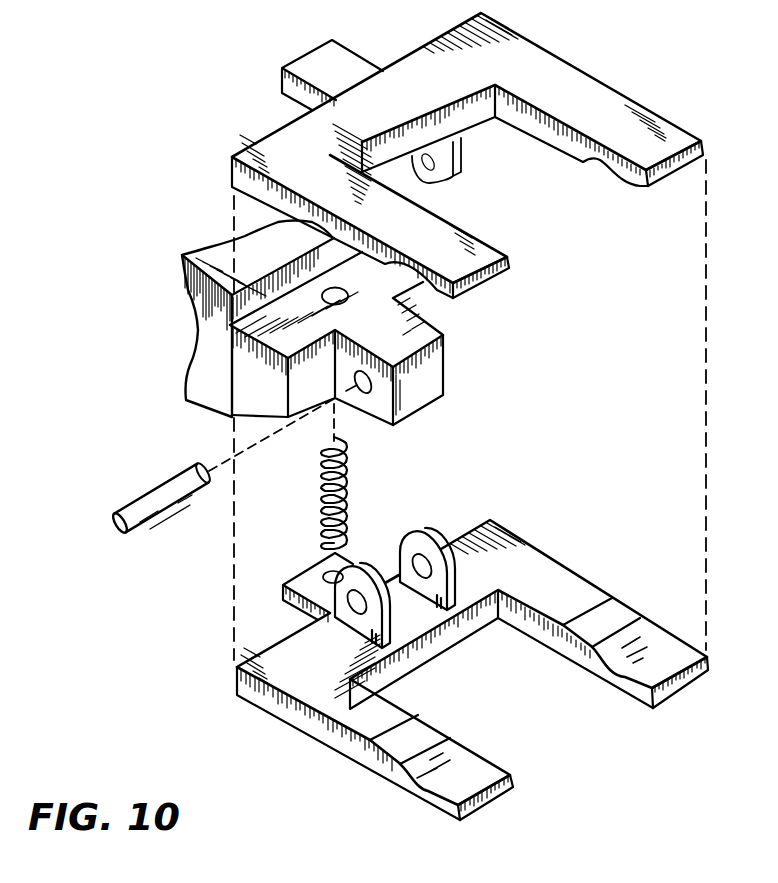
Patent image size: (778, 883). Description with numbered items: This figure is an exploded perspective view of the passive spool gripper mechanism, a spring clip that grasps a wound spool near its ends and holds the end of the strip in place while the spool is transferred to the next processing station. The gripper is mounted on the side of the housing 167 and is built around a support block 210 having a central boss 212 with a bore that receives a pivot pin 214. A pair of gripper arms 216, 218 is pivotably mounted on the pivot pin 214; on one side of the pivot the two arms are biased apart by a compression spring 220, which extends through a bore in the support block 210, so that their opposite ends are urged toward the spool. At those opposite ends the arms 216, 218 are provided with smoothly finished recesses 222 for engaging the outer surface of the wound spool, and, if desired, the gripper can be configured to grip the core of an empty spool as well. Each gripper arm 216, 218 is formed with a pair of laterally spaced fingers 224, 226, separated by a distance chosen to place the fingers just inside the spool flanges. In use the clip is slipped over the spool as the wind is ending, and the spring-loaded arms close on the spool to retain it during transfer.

The housing 167 is at (185, 300).
The support block 210 is at (247, 368).
The central boss 212 is at (433, 368).
The pivot pin 214 is at (167, 516).
The gripper arm 216 is at (303, 693).
The gripper arm 218 is at (262, 140).
The compression spring 220 is at (345, 510).
The recesses 222 is at (612, 160).
The finger 224 is at (487, 278).
The finger 226 is at (688, 168).